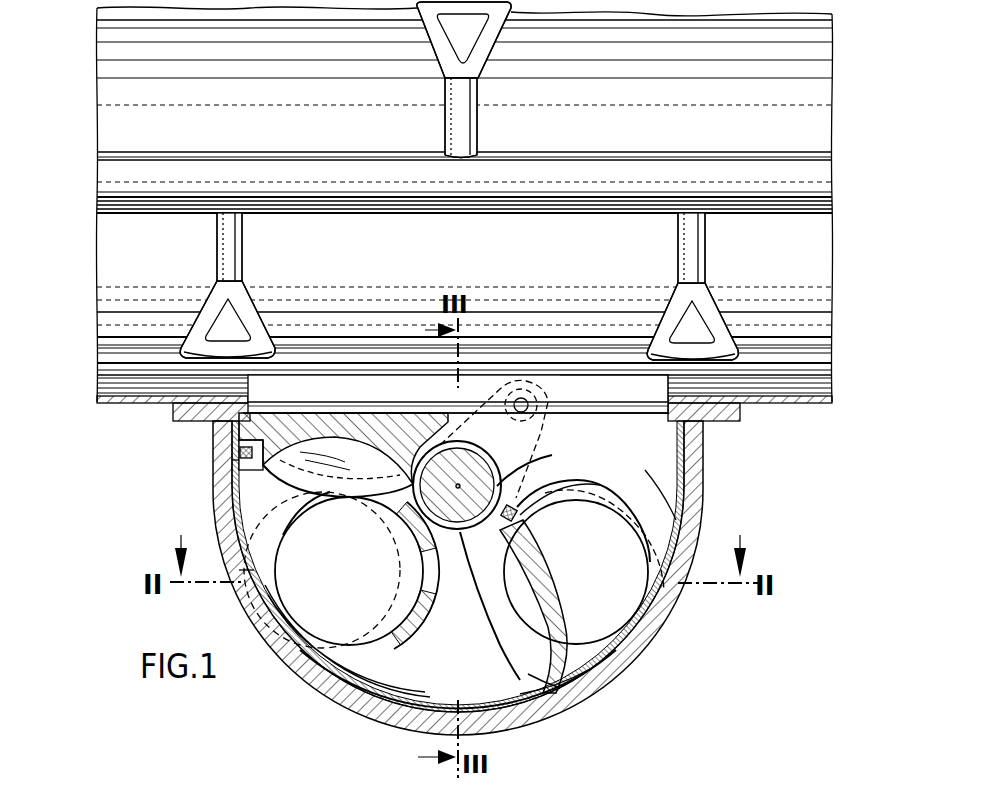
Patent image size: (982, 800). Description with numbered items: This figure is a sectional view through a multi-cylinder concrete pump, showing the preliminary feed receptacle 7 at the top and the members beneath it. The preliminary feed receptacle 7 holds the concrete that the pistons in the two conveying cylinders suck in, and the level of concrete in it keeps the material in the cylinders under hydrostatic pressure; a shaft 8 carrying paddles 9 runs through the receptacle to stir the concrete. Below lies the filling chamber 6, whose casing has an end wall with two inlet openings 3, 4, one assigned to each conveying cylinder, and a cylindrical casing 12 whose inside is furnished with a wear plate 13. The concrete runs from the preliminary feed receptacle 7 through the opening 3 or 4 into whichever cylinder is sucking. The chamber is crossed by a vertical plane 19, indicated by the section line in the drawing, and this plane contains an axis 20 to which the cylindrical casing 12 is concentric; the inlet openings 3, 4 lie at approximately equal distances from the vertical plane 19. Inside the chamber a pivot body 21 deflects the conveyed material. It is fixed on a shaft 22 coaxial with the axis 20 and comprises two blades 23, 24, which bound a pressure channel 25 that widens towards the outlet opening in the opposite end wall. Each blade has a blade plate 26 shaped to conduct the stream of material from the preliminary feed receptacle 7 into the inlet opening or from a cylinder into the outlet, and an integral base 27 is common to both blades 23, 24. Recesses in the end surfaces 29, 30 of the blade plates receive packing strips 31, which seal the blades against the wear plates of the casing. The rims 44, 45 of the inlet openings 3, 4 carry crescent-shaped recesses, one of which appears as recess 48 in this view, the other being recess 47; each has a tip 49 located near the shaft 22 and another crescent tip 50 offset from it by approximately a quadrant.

The opening 3 is at (588, 647).
The opening 4 is at (363, 643).
The filling chamber 6 is at (613, 400).
The preliminary feed receptacle 7 is at (828, 404).
The shaft 8 is at (302, 165).
The paddles 9 is at (215, 296).
The cylindrical casing 12 is at (697, 490).
The wear plate 13 is at (403, 718).
The vertical plane 19 is at (468, 392).
The axis 20 is at (517, 505).
The pivot body 21 is at (384, 428).
The shaft 22 is at (441, 462).
The blade 23 is at (552, 586).
The blade 24 is at (297, 408).
The pressure channel 25 is at (230, 578).
The blade plate 26 is at (340, 458).
The integral base 27 is at (423, 524).
The end surface 29 is at (230, 473).
The end surface 30 is at (560, 684).
The packing strips 31 is at (240, 455).
The rim 44 is at (647, 600).
The rim 45 is at (280, 595).
The recess 47 is at (573, 480).
The recess 48 is at (312, 500).
The tip 49 is at (516, 515).
The crescent tip 50 is at (644, 541).